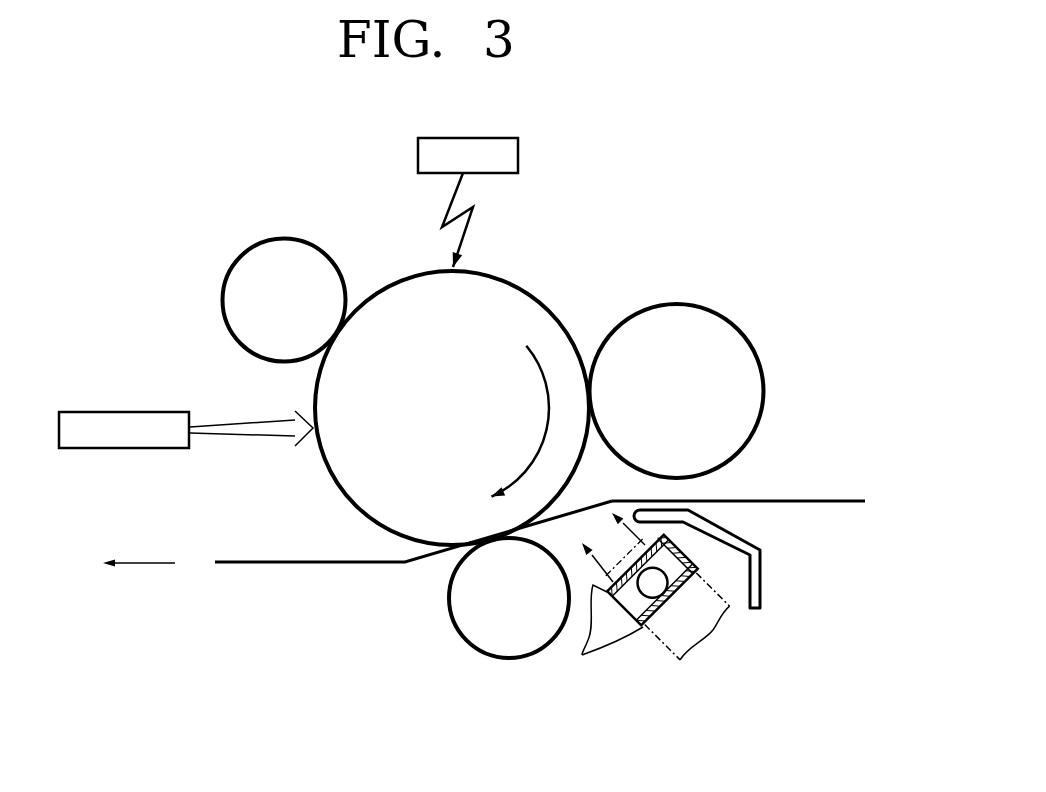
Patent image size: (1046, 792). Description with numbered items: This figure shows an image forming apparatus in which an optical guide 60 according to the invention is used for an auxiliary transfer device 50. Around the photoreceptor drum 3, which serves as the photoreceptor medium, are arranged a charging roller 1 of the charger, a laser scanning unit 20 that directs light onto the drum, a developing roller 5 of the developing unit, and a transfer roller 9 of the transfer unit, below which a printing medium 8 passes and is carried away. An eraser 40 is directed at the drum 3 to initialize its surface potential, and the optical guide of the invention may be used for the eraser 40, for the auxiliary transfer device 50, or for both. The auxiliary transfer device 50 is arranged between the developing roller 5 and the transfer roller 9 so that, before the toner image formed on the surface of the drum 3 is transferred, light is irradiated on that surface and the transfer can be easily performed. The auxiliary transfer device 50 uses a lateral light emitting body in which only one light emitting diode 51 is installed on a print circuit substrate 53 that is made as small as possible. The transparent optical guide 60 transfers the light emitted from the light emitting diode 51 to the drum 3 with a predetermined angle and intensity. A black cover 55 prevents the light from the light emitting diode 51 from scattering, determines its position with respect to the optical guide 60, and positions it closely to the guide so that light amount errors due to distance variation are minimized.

The charging roller 1 is at (283, 248).
The photoreceptor drum 3 is at (530, 313).
The developing roller 5 is at (682, 320).
The printing medium 8 is at (267, 567).
The transfer roller 9 is at (468, 601).
The laser scanning unit 20 is at (477, 137).
The eraser 40 is at (120, 411).
The auxiliary transfer device 50 is at (645, 628).
The light emitting diode 51 is at (645, 633).
The print circuit substrate 53 is at (688, 633).
The cover 55 is at (625, 640).
The optical guide 60 is at (698, 560).